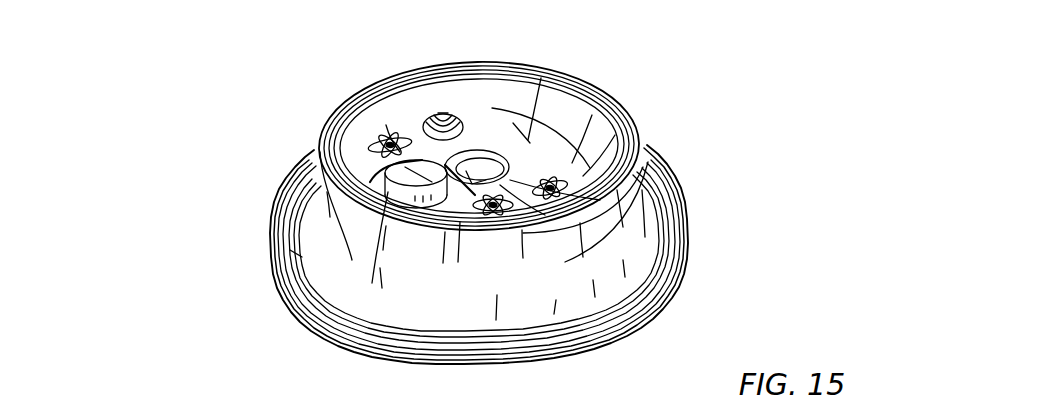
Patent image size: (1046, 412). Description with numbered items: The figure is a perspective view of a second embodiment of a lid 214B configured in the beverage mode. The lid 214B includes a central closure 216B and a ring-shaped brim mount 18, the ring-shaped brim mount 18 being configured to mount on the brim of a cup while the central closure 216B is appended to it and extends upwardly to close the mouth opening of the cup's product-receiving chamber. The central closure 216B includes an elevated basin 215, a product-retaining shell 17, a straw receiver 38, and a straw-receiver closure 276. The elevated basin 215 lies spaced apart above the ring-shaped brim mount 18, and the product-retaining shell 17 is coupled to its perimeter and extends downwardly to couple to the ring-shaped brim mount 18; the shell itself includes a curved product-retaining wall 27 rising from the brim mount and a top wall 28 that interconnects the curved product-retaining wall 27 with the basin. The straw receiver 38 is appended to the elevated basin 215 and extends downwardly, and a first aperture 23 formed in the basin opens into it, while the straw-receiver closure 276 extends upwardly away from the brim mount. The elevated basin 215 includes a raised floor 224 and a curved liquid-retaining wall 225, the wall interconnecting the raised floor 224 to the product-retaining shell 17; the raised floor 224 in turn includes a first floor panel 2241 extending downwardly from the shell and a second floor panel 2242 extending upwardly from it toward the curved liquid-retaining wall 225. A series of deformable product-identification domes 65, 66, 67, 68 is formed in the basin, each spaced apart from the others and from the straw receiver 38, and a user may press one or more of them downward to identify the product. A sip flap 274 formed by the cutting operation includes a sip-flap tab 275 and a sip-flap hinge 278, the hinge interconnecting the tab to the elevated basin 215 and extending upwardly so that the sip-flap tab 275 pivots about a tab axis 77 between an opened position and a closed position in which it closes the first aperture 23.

The product-retaining shell 17 is at (618, 86).
The ring-shaped brim mount 18 is at (576, 360).
The first aperture 23 is at (576, 72).
The curved product-retaining wall 27 is at (613, 237).
The top wall 28 is at (616, 168).
The straw receiver 38 is at (386, 125).
The deformable product-identification dome 65 is at (444, 265).
The deformable product-identification dome 66 is at (520, 262).
The deformable product-identification dome 67 is at (373, 140).
The deformable product-identification dome 68 is at (443, 114).
The tab axis 77 is at (336, 115).
The elevated basin 215 is at (836, 118).
The raised floor 224 is at (470, 137).
The curved liquid-retaining wall 225 is at (538, 98).
The lid 214B is at (678, 88).
The central closure 216B is at (835, 130).
The sip flap 274 is at (372, 318).
The sip-flap tab 275 is at (346, 299).
The straw-receiver closure 276 is at (448, 157).
The sip-flap hinge 278 is at (377, 313).
The first floor panel 2241 is at (495, 222).
The second floor panel 2242 is at (510, 205).